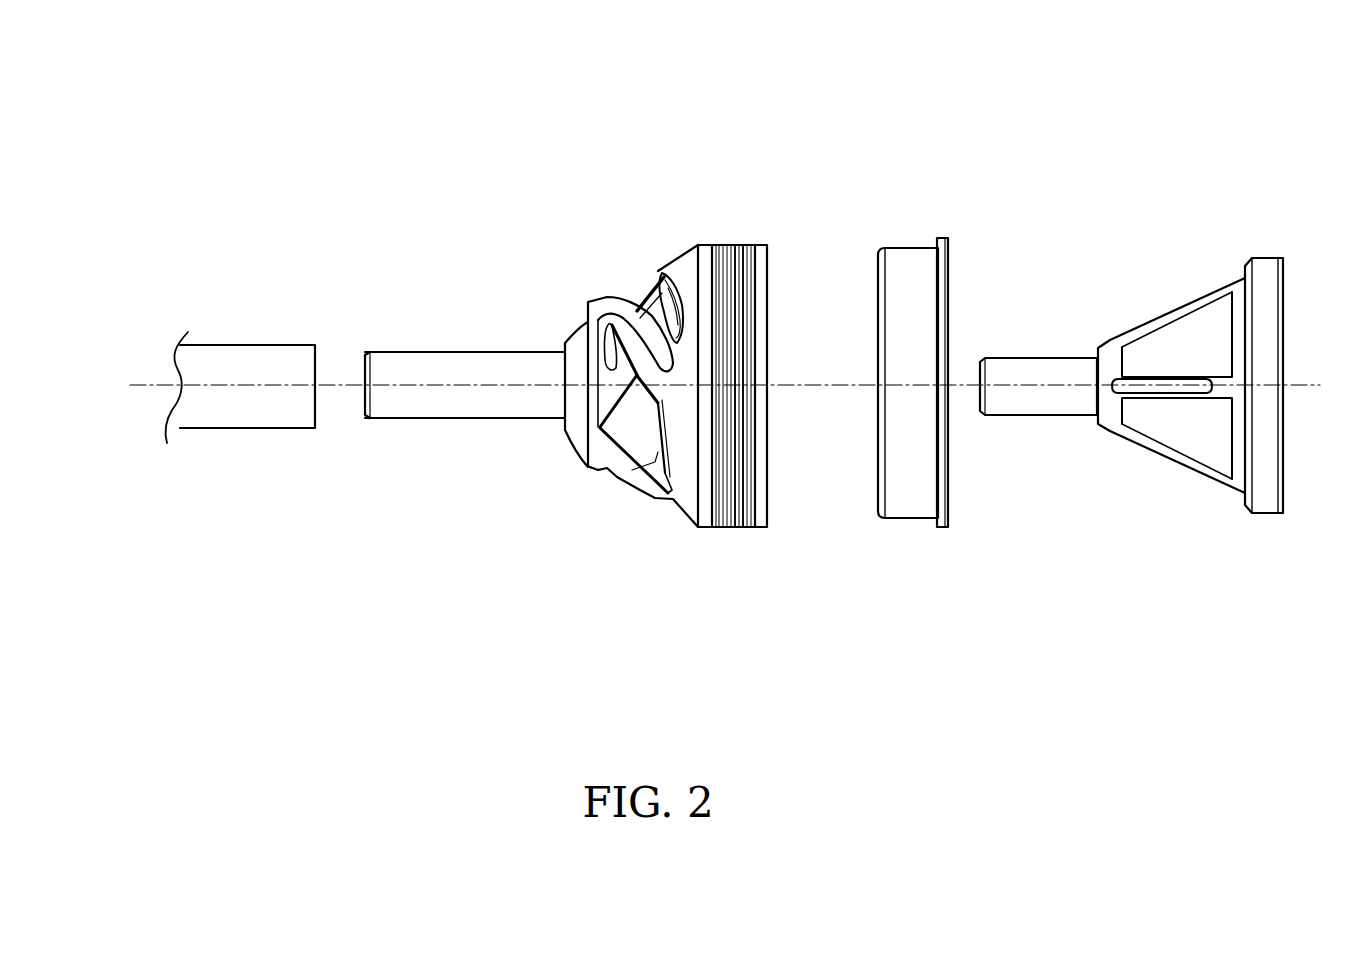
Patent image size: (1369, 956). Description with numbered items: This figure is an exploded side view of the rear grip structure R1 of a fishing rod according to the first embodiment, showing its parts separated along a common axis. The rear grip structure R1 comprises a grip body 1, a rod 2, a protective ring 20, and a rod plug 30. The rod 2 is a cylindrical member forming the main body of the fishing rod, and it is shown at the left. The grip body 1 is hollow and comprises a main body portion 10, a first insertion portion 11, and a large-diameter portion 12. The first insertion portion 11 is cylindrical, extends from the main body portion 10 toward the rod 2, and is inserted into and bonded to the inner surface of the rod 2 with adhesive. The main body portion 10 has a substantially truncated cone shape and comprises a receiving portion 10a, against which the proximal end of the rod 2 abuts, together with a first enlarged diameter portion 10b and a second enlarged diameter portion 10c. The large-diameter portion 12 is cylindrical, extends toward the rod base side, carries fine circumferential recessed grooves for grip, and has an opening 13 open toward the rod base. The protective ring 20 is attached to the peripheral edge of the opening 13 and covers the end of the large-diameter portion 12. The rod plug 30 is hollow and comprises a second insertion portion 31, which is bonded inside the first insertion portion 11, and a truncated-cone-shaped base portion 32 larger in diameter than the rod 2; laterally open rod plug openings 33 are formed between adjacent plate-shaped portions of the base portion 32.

The rear grip structure R1 is at (330, 147).
The grip body 1 is at (602, 331).
The rod 2 is at (240, 352).
The main body portion 10 is at (595, 349).
The receiving portion 10a is at (558, 348).
The first enlarged diameter portion 10b is at (577, 327).
The second enlarged diameter portion 10c is at (678, 267).
The first insertion portion 11 is at (460, 418).
The large-diameter portion 12 is at (737, 243).
The opening 13 is at (767, 297).
The protective ring 20 is at (900, 498).
The rod plug 30 is at (1158, 359).
The second insertion portion 31 is at (1040, 362).
The base portion 32 is at (1190, 467).
The rod plug opening 33 is at (1186, 322).